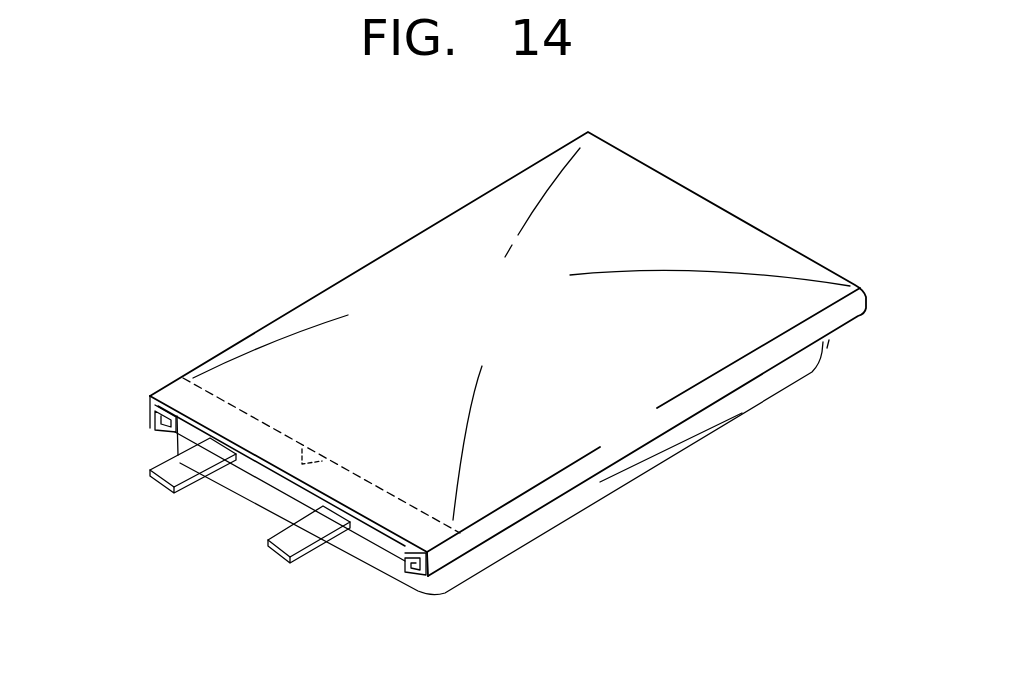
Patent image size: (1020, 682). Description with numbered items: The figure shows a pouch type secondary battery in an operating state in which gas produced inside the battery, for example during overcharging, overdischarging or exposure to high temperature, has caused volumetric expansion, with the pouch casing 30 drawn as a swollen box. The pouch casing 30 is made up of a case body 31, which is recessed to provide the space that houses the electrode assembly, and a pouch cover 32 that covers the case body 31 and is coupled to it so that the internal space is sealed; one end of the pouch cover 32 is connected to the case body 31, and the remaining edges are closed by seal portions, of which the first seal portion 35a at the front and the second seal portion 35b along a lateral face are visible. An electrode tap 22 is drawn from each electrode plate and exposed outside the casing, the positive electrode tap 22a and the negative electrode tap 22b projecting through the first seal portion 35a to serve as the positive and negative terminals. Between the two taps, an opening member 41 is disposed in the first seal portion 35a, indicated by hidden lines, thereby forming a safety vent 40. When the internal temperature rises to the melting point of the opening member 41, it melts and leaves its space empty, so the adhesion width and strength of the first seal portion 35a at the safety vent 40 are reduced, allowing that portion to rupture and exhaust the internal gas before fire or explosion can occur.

The pouch casing 30 is at (472, 390).
The pouch cover 32 is at (433, 252).
The case body 31 is at (676, 431).
The first seal portion 35a is at (177, 398).
The second seal portion 35b is at (510, 513).
The safety vent 40 is at (286, 452).
The opening member 41 is at (300, 463).
The electrode tap 22 is at (214, 543).
The positive electrode tap 22a is at (162, 489).
The negative electrode tap 22b is at (272, 561).